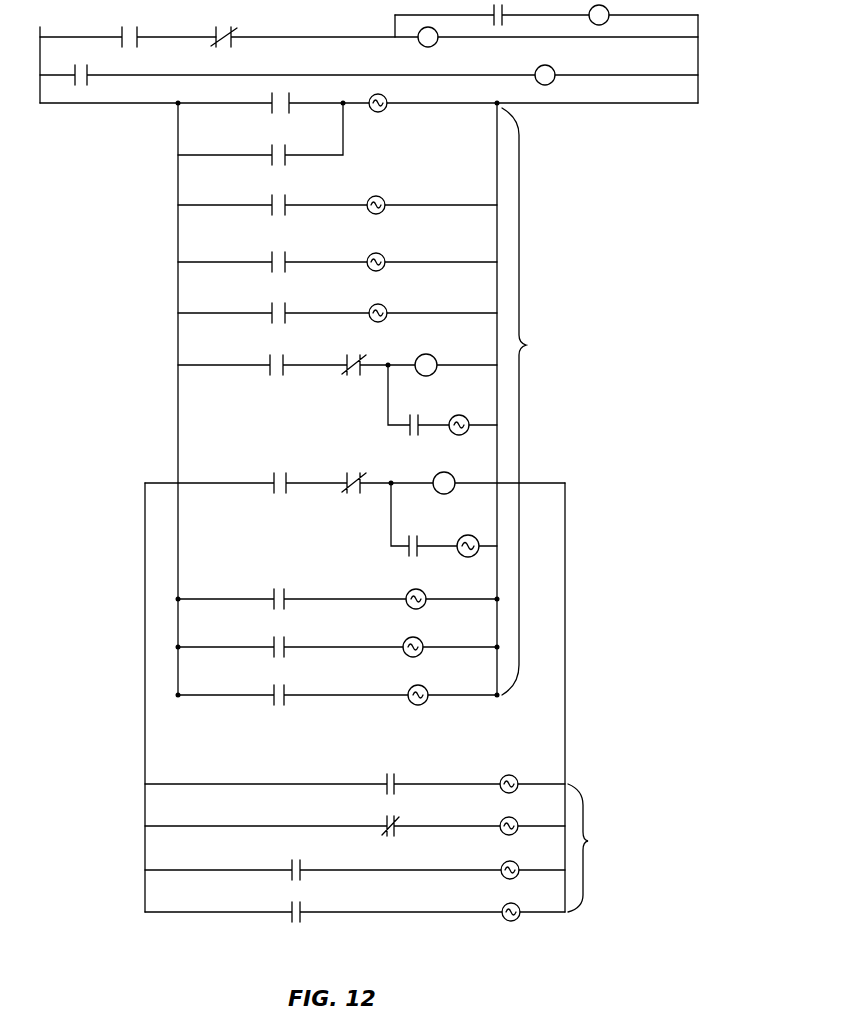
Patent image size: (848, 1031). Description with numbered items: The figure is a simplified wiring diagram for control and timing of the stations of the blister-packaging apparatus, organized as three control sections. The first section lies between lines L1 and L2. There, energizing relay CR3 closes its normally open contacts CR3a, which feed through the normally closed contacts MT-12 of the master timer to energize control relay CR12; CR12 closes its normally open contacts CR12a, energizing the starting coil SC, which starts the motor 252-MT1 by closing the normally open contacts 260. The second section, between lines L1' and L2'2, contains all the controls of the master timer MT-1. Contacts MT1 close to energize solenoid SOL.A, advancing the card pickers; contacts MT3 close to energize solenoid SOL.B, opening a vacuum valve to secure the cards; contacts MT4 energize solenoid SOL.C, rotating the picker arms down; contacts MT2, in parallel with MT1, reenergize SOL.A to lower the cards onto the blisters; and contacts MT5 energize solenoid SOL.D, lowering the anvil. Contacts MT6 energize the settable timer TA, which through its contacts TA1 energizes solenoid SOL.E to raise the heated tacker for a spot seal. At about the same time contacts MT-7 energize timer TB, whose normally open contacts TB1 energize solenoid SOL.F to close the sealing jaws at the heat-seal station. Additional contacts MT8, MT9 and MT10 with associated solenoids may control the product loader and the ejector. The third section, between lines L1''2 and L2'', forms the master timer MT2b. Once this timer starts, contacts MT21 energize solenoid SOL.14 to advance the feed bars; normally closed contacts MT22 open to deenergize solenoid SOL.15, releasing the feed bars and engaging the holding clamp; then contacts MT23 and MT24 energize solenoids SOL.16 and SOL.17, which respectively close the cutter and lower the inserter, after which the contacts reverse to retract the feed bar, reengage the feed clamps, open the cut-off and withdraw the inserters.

The line L1 is at (38, 57).
The line L2 is at (707, 56).
The normally open contacts CR3a is at (128, 41).
The normally closed contacts MT-12 is at (314, 29).
The control relay CR12 is at (546, 31).
The normally open contacts CR12a is at (492, 19).
The starting coil SC is at (643, 17).
The normally open contacts 260 is at (287, 77).
The motor 252-MT1 is at (616, 68).
The contacts MT1 is at (270, 96).
The solenoid SOL.A is at (533, 95).
The line L1' is at (159, 399).
The line L2'2 is at (480, 399).
The contacts MT2 is at (260, 134).
The contacts MT3 is at (272, 198).
The solenoid SOL.B is at (432, 197).
The contacts MT4 is at (272, 255).
The solenoid SOL.C is at (432, 254).
The contacts MT5 is at (273, 306).
The solenoid SOL.D is at (433, 308).
The contacts MT6 is at (296, 359).
The settable timer TA is at (456, 365).
The contacts TA1 is at (418, 400).
The solenoid SOL.E is at (472, 418).
The contacts MT-7 is at (289, 477).
The timer TB is at (499, 483).
The normally open contacts TB1 is at (424, 519).
The solenoid SOL.F is at (477, 535).
The contacts MT8 is at (338, 596).
The contacts MT9 is at (338, 643).
The contacts MT10 is at (338, 691).
The master timer MT-1 is at (530, 401).
The line L1''2 is at (125, 697).
The line L2'' is at (587, 697).
The contacts MT21 is at (355, 778).
The solenoid SOL.14 is at (517, 777).
The normally closed contacts MT22 is at (355, 819).
The solenoid SOL.15 is at (517, 818).
The contacts MT23 is at (355, 863).
The solenoid SOL.16 is at (518, 863).
The contacts MT24 is at (355, 905).
The solenoid SOL.17 is at (524, 903).
The master timer MT2b is at (596, 848).